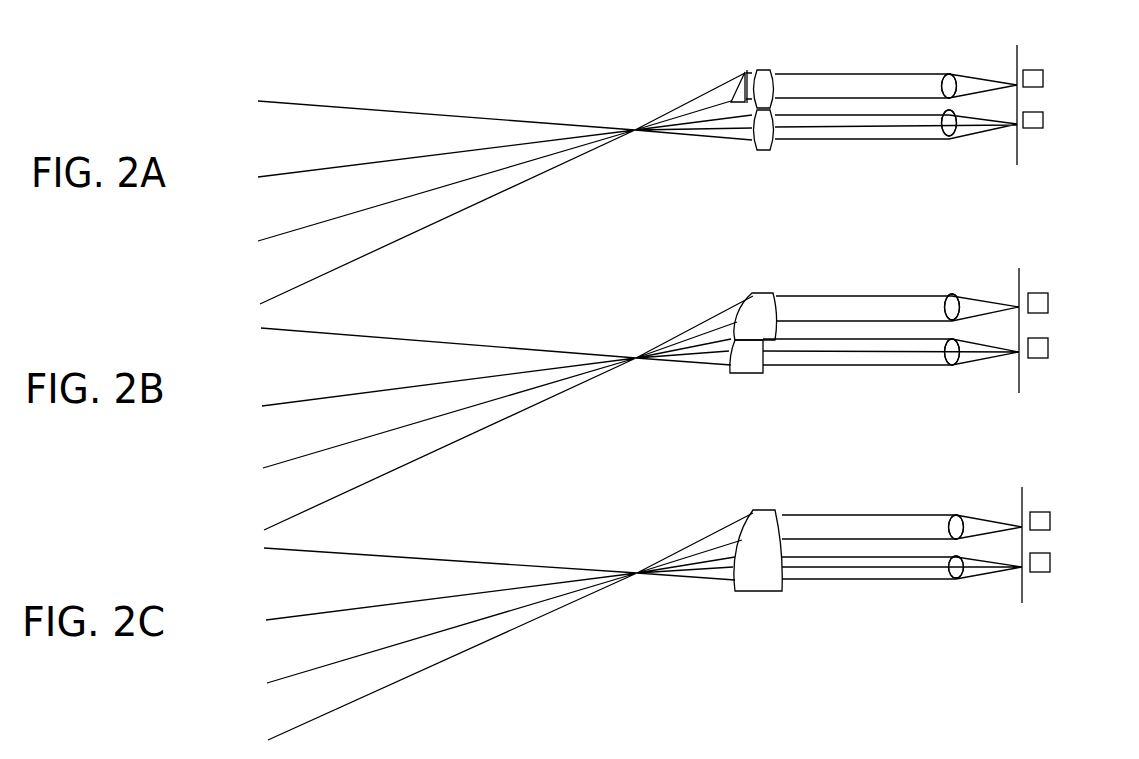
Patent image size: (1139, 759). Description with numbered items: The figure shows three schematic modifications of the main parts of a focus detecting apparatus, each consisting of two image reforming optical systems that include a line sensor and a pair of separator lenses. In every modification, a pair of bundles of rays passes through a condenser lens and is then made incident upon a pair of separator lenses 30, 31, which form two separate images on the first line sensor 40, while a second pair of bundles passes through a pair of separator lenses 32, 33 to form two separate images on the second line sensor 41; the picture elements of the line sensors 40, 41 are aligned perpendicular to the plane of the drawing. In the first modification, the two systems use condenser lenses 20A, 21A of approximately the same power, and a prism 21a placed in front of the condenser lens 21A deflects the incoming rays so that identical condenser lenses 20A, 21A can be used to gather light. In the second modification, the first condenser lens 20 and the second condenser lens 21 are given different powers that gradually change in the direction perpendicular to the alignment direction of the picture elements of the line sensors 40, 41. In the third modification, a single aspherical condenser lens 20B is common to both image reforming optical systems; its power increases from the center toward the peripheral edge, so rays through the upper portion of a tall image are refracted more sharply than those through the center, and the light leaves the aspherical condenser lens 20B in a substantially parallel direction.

In FIG. 2B, the first condenser lens 20 is at (747, 373).
In FIG. 2A, the condenser lens 20A is at (765, 151).
In FIG. 2C, the aspherical condenser lens 20B is at (768, 592).
In FIG. 2B, the second condenser lens 21 is at (767, 292).
In FIG. 2A, the condenser lens 21A is at (760, 70).
In FIG. 2A, the prism 21a is at (743, 73).
In FIG. 2A, the separator lens 30 is at (957, 148).
In FIG. 2B, the separator lens 30 is at (953, 365).
In FIG. 2C, the separator lens 30 is at (957, 578).
In FIG. 2A, the separator lens 31 is at (961, 143).
In FIG. 2B, the separator lens 31 is at (960, 378).
In FIG. 2C, the separator lens 31 is at (963, 595).
In FIG. 2A, the separator lens 32 is at (948, 75).
In FIG. 2B, the separator lens 32 is at (953, 295).
In FIG. 2C, the separator lens 32 is at (957, 515).
In FIG. 2A, the separator lens 33 is at (939, 58).
In FIG. 2B, the separator lens 33 is at (964, 282).
In FIG. 2C, the separator lens 33 is at (954, 503).
In FIG. 2A, the first line sensor 40 is at (1043, 120).
In FIG. 2B, the first line sensor 40 is at (1048, 348).
In FIG. 2C, the first line sensor 40 is at (1050, 562).
In FIG. 2A, the second line sensor 41 is at (1043, 78).
In FIG. 2B, the second line sensor 41 is at (1048, 303).
In FIG. 2C, the second line sensor 41 is at (1050, 521).